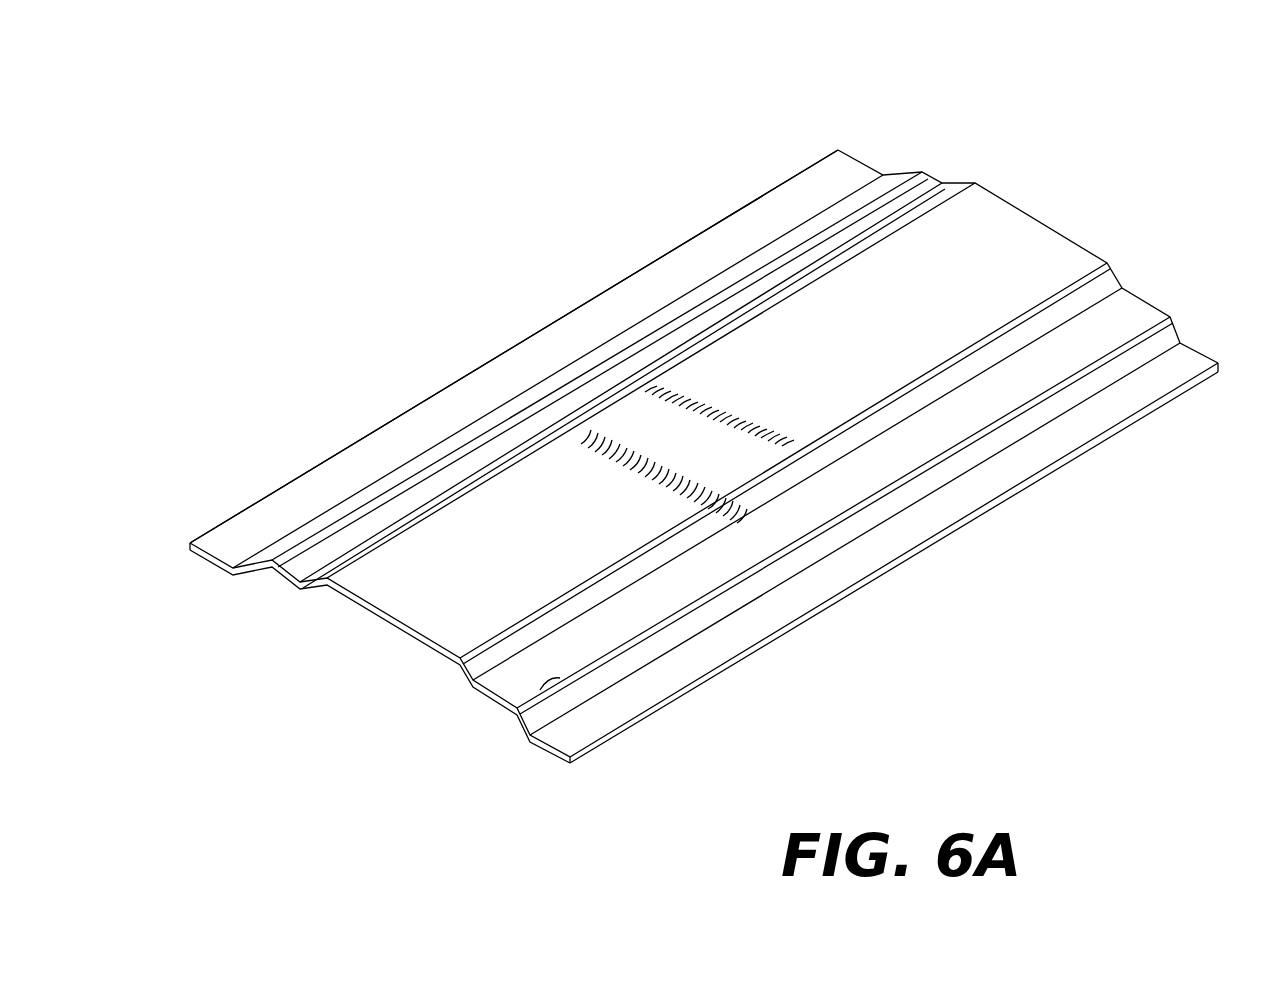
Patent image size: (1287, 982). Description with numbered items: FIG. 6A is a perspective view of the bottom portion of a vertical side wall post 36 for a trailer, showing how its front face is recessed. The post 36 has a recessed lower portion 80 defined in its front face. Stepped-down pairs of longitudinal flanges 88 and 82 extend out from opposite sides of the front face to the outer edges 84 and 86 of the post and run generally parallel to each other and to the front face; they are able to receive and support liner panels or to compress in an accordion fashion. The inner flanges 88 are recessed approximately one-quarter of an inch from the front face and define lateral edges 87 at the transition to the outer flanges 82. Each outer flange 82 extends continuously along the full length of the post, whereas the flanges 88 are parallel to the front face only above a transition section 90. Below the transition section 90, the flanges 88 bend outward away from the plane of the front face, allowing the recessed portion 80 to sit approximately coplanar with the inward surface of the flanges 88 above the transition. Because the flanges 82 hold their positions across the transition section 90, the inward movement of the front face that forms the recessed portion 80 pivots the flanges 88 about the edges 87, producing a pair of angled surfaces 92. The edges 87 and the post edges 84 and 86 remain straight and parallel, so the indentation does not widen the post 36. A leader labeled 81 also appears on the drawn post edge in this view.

The post 36 is at (1198, 383).
The recessed lower portion 80 is at (433, 600).
The panel edge 81 is at (428, 645).
The flanges 82 is at (843, 172).
The outer edge 84 is at (793, 177).
The outer edge 86 is at (1120, 432).
The lateral edges 87 is at (897, 174).
The flanges 88 is at (940, 183).
The transition section 90 is at (715, 463).
The angled surfaces 92 is at (330, 556).